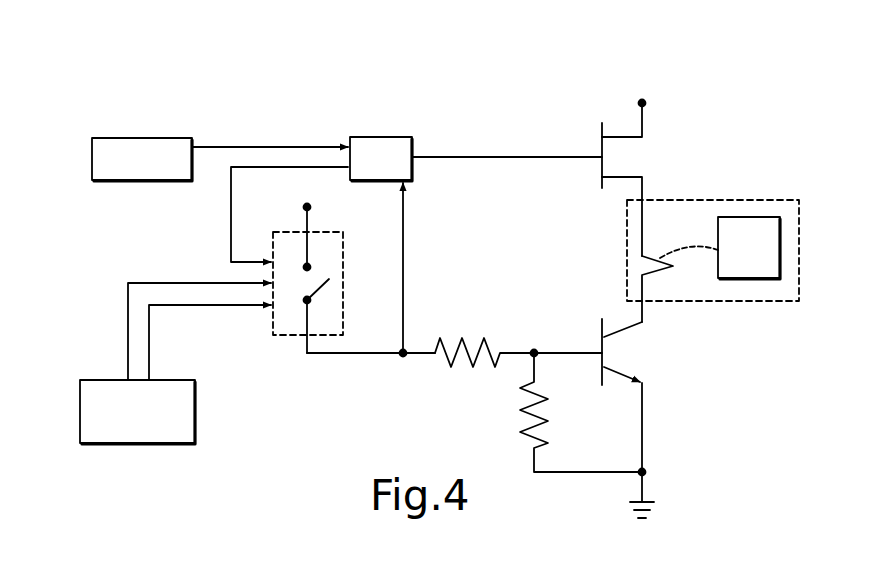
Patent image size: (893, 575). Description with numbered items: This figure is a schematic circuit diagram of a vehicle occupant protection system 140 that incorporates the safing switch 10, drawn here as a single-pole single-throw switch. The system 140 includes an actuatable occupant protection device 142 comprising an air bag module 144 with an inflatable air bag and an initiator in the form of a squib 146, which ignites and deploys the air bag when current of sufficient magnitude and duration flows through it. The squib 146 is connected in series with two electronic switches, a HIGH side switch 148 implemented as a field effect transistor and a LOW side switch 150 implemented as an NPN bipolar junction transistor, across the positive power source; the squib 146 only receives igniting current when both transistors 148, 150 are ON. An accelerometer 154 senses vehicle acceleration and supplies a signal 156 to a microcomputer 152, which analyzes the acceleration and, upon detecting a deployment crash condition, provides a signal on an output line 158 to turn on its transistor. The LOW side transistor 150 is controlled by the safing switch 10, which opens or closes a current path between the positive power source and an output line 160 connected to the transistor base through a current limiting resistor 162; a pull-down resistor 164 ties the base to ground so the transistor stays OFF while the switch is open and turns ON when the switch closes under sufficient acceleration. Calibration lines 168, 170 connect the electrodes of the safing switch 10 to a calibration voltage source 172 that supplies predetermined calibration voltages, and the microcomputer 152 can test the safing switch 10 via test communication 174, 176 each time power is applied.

The system 140 is at (178, 74).
The accelerometer 154 is at (122, 137).
The signal 156 is at (275, 146).
The microcomputer 152 is at (378, 136).
The test communication 174 is at (231, 224).
The safing switch 10 is at (324, 296).
The calibration line 168 is at (128, 336).
The calibration line 170 is at (149, 337).
The calibration voltage source 172 is at (88, 394).
The output line 160 is at (362, 354).
The test communication 176 is at (404, 240).
The output line 158 is at (565, 156).
The HIGH side switch 148 is at (648, 151).
The occupant protection device 142 is at (745, 302).
The air bag module 144 is at (718, 228).
The squib 146 is at (652, 273).
The LOW side switch 150 is at (648, 352).
The current limiting resistor 162 is at (483, 344).
The pull-down resistor 164 is at (520, 394).